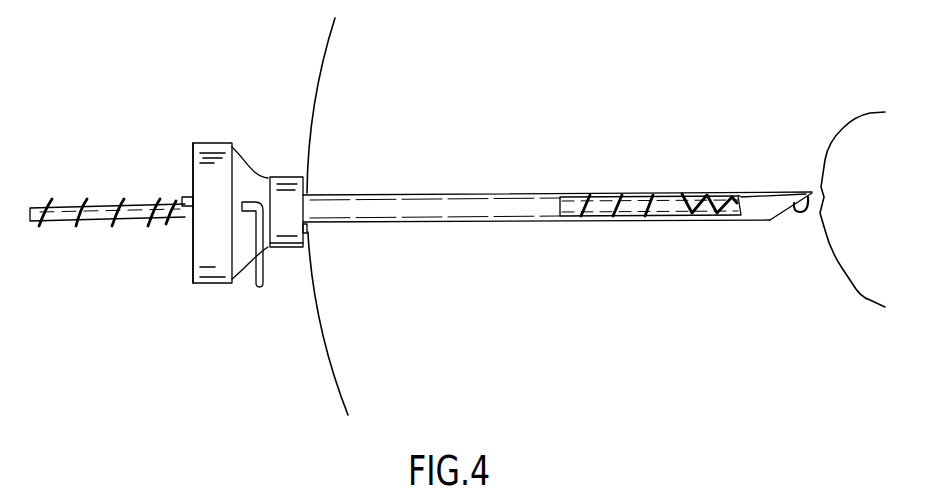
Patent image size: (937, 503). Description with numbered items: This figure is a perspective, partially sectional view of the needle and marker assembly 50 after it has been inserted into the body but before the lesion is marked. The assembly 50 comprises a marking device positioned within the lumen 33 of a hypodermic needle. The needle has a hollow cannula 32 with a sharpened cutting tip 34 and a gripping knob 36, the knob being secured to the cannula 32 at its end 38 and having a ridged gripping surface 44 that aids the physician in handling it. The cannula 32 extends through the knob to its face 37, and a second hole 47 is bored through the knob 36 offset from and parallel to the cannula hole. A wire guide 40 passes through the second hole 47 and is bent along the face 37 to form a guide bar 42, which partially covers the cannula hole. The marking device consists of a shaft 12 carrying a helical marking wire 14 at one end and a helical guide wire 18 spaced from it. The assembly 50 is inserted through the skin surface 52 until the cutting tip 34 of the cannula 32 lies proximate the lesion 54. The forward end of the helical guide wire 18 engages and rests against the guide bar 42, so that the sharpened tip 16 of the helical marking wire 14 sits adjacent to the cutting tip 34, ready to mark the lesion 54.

The shaft 12 is at (38, 227).
The helical marking wire 14 is at (703, 193).
The sharpened tip 16 is at (808, 207).
The helical guide wire 18 is at (93, 228).
The cannula 32 is at (500, 195).
The lumen 33 is at (712, 215).
The cutting tip 34 is at (810, 190).
The gripping knob 36 is at (212, 135).
The face 37 is at (193, 155).
The end 38 is at (307, 233).
The wire guide 40 is at (260, 287).
The guide bar 42 is at (184, 200).
The ridged gripping surface 44 is at (210, 285).
The second hole 47 is at (245, 178).
The needle and marker assembly 50 is at (210, 370).
The skin surface 52 is at (340, 388).
The lesion 54 is at (867, 302).